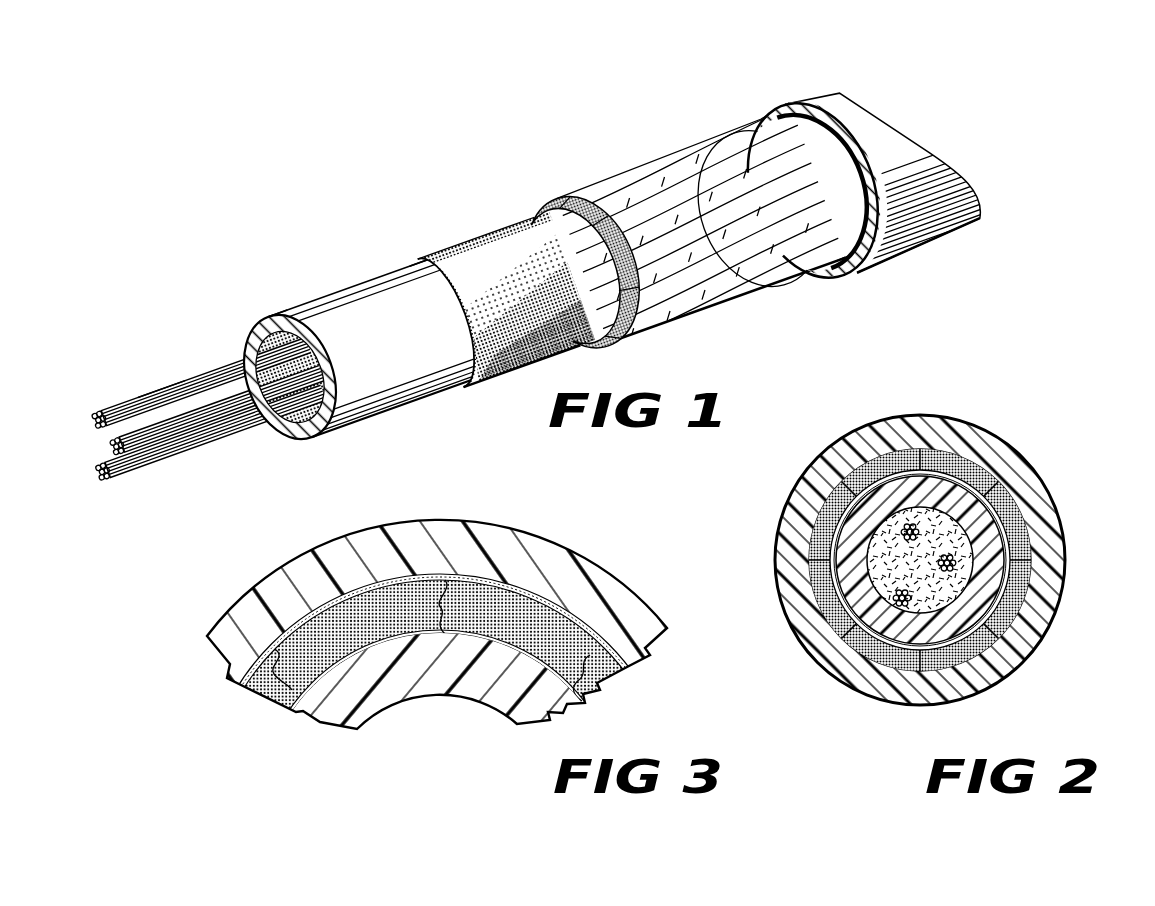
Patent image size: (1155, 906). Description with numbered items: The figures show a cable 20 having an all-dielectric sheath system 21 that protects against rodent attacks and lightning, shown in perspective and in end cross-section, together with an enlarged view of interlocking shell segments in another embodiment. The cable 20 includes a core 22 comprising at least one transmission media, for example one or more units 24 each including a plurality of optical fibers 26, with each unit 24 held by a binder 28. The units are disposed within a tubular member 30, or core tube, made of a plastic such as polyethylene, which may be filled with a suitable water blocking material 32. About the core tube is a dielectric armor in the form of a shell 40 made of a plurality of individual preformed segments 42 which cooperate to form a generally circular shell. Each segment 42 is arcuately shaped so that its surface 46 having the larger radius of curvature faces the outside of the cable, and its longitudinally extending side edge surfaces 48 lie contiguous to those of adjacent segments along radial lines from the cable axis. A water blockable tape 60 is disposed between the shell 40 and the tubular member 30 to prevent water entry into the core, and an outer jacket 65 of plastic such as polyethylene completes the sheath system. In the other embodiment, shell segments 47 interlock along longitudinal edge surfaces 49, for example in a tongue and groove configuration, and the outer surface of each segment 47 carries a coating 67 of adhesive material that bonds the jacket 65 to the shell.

In FIG. 1, the cable 20 is at (456, 184).
In FIG. 2, the cable 20 is at (1034, 410).
In FIG. 1, the all-dielectric sheath system 21 is at (522, 224).
In FIG. 1, the core 22 is at (220, 450).
In FIG. 2, the core 22 is at (868, 541).
In FIG. 1, the unit 24 is at (190, 378).
In FIG. 2, the unit 24 is at (934, 528).
In FIG. 1, the optical fibers 26 is at (110, 474).
In FIG. 2, the optical fibers 26 is at (953, 558).
In FIG. 1, the binder 28 is at (160, 396).
In FIG. 1, the tubular member 30 is at (262, 318).
In FIG. 2, the tubular member 30 is at (924, 607).
In FIG. 3, the tubular member 30 is at (446, 698).
In FIG. 1, the water blocking material 32 is at (288, 430).
In FIG. 2, the water blocking material 32 is at (913, 512).
In FIG. 1, the shell 40 is at (562, 198).
In FIG. 2, the shell 40 is at (1028, 524).
In FIG. 1, the preformed segments 42 is at (662, 168).
In FIG. 2, the preformed segments 42 is at (840, 466).
In FIG. 1, the surface 46 is at (764, 268).
In FIG. 2, the surface 46 is at (1000, 504).
In FIG. 3, the shell segments 47 is at (472, 630).
In FIG. 1, the side edge surfaces 48 is at (614, 236).
In FIG. 2, the side edge surfaces 48 is at (987, 478).
In FIG. 3, the longitudinal edge surfaces 49 is at (560, 670).
In FIG. 1, the water blockable tape 60 is at (475, 380).
In FIG. 2, the water blockable tape 60 is at (838, 494).
In FIG. 1, the outer jacket 65 is at (772, 122).
In FIG. 2, the outer jacket 65 is at (924, 424).
In FIG. 3, the outer jacket 65 is at (452, 528).
In FIG. 3, the coating 67 is at (610, 660).